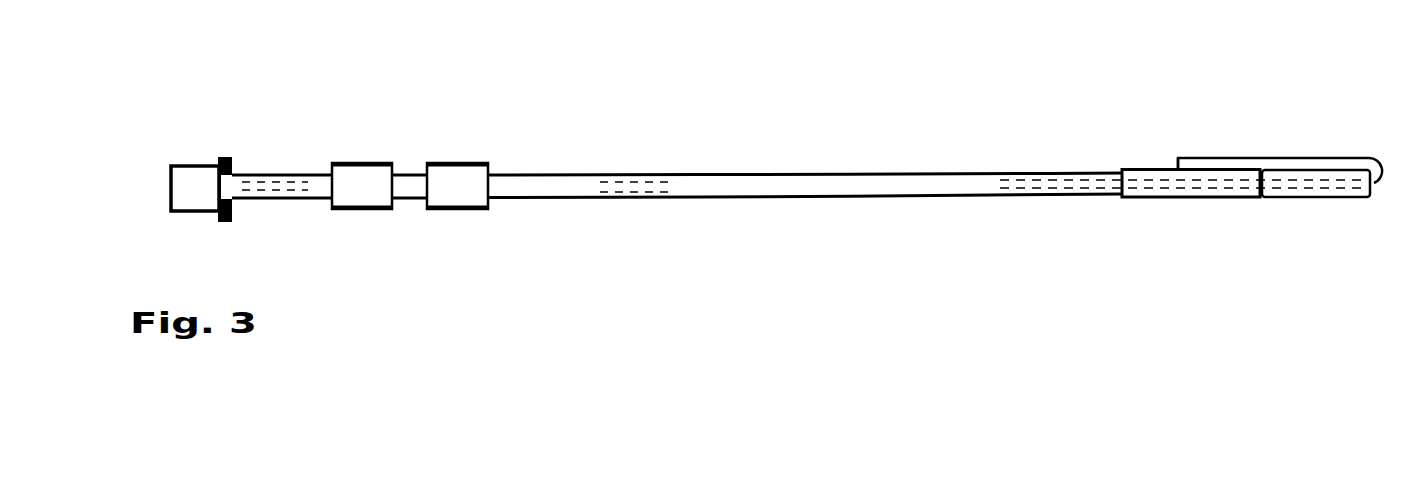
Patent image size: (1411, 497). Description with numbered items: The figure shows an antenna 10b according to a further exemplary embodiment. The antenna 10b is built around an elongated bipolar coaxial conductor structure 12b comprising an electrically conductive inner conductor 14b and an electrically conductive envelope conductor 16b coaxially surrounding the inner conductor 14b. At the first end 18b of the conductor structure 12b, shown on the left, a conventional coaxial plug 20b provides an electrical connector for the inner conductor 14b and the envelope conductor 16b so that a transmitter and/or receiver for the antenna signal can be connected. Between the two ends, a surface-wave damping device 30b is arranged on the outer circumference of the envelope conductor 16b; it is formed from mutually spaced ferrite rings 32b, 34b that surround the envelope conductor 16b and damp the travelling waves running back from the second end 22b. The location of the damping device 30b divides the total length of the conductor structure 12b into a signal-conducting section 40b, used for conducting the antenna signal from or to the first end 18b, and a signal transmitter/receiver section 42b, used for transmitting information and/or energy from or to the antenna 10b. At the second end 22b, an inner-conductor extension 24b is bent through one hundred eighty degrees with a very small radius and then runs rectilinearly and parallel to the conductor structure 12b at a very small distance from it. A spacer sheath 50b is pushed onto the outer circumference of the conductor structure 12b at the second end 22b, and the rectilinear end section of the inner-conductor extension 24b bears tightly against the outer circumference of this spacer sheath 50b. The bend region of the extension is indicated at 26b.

The antenna 10b is at (663, 112).
The coaxial conductor structure 12b is at (876, 167).
The inner conductor 14b is at (1029, 186).
The envelope conductor 16b is at (1065, 197).
The first end 18b is at (244, 164).
The coaxial plug 20b is at (191, 188).
The second end 22b is at (1262, 204).
The inner-conductor extension 24b is at (1253, 164).
The clip proximal end 26b is at (1175, 150).
The surface-wave damping device 30b is at (408, 266).
The ferrite ring 32b is at (451, 193).
The ferrite ring 34b is at (360, 198).
The signal-conducting section 40b is at (276, 212).
The signal transmitter/receiver section 42b is at (761, 229).
The spacer sheath 50b is at (1180, 198).